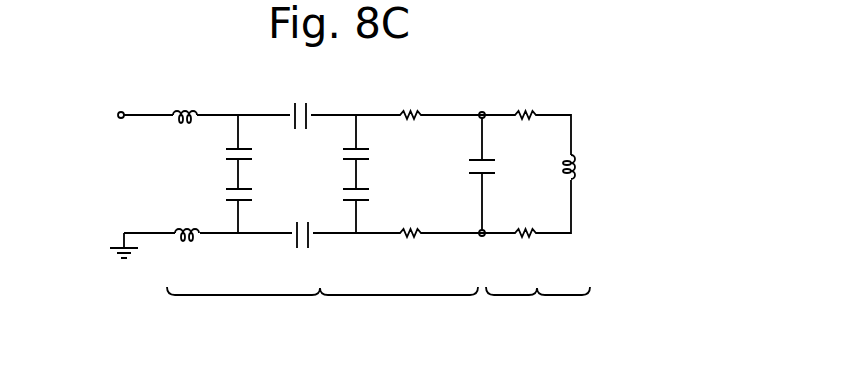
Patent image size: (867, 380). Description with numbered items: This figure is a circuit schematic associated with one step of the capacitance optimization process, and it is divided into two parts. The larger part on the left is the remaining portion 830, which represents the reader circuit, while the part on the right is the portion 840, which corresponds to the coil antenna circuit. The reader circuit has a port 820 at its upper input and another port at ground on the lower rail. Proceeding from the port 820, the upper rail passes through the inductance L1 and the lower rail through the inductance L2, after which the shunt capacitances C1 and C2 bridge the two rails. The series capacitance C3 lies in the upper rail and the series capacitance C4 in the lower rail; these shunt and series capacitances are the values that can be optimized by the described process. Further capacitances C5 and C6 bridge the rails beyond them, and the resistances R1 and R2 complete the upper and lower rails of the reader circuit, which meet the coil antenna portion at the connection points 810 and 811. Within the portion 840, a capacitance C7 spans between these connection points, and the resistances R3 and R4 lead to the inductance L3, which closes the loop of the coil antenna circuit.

The port 820 is at (119, 112).
The first output node 810 is at (481, 112).
The second output node 811 is at (482, 236).
The remaining portion 830 is at (322, 307).
The portion 840 is at (538, 307).
The inductance L1 is at (185, 101).
The inductance L2 is at (187, 250).
The inductor L3 is at (585, 169).
The shunt capacitance C1 is at (222, 156).
The shunt capacitance C2 is at (221, 197).
The series capacitance C3 is at (298, 104).
The series capacitance C4 is at (303, 248).
The capacitor C5 is at (339, 156).
The capacitor C6 is at (340, 197).
The capacitor C7 is at (465, 169).
The resistance R1 is at (410, 103).
The resistance R2 is at (410, 247).
The resistor R3 is at (525, 103).
The resistor R4 is at (525, 247).